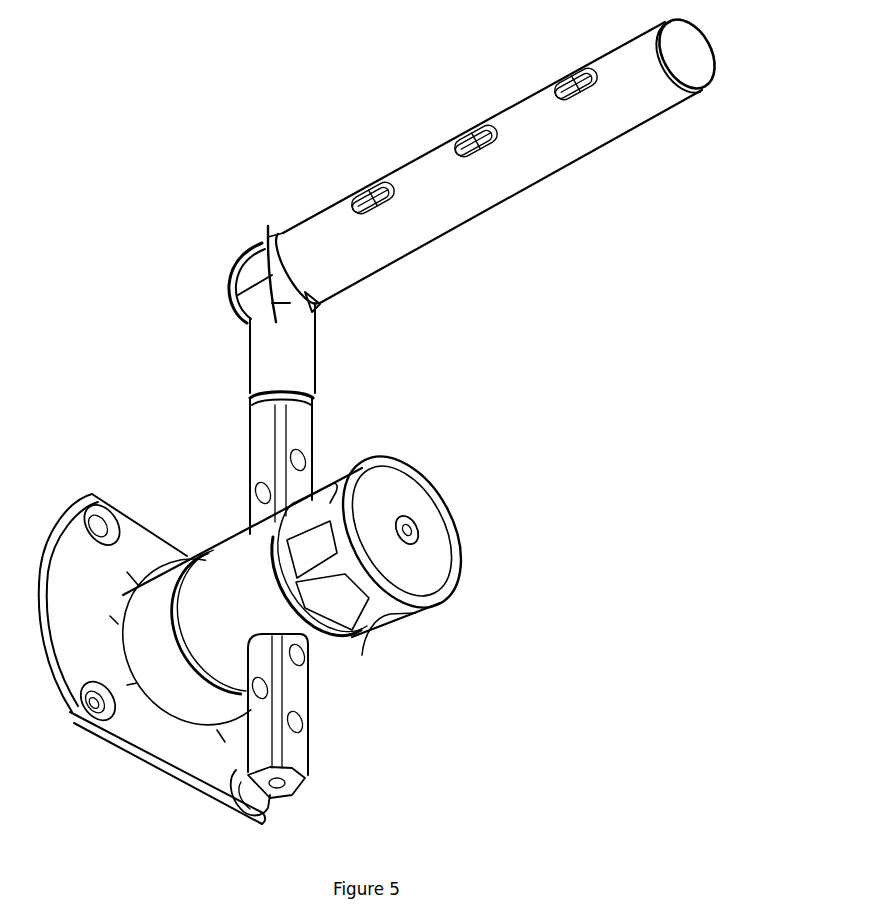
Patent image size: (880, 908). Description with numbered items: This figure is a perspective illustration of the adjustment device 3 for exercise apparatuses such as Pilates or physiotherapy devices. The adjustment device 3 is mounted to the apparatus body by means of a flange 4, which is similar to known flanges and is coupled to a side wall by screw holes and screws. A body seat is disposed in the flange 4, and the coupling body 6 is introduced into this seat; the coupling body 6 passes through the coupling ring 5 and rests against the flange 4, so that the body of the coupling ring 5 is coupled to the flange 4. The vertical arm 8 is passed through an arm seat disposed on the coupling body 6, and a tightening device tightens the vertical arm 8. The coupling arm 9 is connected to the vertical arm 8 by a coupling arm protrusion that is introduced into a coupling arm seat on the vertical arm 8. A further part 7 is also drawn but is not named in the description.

The adjustment device 3 is at (266, 238).
The flange 4 is at (85, 578).
The coupling ring 5 is at (162, 600).
The coupling body 6 is at (273, 595).
The knob 7 is at (423, 553).
The vertical arm 8 is at (293, 355).
The coupling arm 9 is at (483, 177).